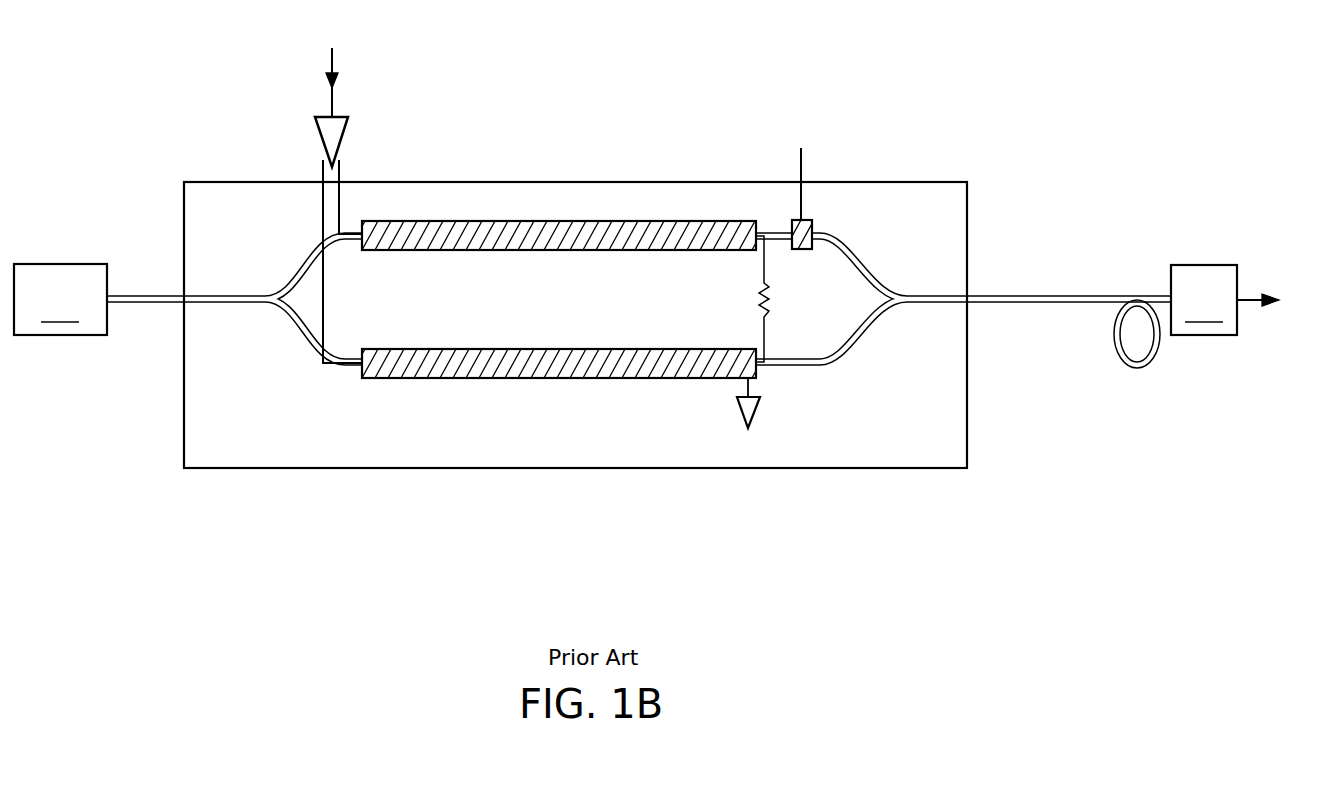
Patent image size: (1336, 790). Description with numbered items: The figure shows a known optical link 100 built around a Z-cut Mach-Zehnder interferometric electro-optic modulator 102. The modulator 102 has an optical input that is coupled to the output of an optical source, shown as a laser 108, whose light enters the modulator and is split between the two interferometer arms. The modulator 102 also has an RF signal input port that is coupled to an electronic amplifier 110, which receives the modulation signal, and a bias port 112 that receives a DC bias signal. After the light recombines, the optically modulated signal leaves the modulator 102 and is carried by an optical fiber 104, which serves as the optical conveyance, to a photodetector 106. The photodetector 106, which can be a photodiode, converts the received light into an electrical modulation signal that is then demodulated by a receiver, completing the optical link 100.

The optical link 100 is at (583, 73).
The electro-optic modulator 102 is at (580, 213).
The optical fiber 104 is at (1136, 366).
The photodetector 106 is at (1247, 310).
The laser 108 is at (60, 299).
The electronic amplifier 110 is at (349, 132).
The bias port 112 is at (838, 146).